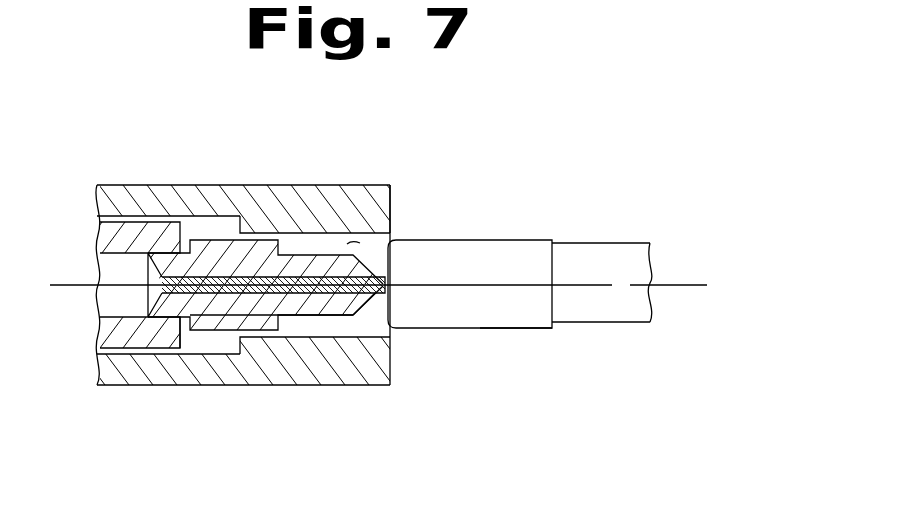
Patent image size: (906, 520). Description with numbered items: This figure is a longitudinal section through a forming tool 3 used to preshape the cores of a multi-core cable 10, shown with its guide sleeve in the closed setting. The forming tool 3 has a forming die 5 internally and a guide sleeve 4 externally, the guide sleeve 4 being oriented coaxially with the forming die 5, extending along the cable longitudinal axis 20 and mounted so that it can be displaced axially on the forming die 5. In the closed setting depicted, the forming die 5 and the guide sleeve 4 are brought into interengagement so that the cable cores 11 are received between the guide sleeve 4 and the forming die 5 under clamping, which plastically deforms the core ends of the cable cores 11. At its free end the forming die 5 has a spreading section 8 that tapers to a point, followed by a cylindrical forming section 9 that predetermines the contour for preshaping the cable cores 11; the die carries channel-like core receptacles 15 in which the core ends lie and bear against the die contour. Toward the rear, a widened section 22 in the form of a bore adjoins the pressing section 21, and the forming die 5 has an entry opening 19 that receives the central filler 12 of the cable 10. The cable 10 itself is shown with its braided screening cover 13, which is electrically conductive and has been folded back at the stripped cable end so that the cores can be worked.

The forming tool 3 is at (125, 190).
The guide sleeve 4 is at (323, 188).
The forming die 5 is at (256, 265).
The spreading section 8 is at (367, 300).
The cylindrical forming section 9 is at (297, 300).
The cable 10 is at (624, 259).
The cable cores 11 is at (350, 244).
The filler 12 is at (265, 300).
The braided screening cover 13 is at (508, 318).
The core receptacles 15 is at (218, 245).
The entry opening 19 is at (213, 333).
The cable longitudinal axis 20 is at (692, 283).
The pressing section 21 is at (403, 202).
The widened section 22 is at (198, 228).